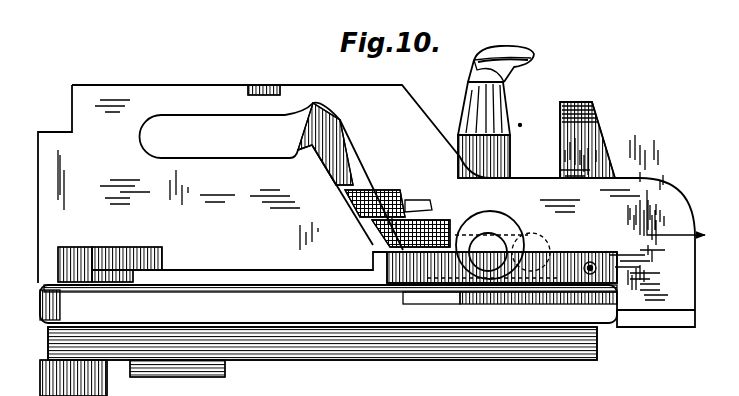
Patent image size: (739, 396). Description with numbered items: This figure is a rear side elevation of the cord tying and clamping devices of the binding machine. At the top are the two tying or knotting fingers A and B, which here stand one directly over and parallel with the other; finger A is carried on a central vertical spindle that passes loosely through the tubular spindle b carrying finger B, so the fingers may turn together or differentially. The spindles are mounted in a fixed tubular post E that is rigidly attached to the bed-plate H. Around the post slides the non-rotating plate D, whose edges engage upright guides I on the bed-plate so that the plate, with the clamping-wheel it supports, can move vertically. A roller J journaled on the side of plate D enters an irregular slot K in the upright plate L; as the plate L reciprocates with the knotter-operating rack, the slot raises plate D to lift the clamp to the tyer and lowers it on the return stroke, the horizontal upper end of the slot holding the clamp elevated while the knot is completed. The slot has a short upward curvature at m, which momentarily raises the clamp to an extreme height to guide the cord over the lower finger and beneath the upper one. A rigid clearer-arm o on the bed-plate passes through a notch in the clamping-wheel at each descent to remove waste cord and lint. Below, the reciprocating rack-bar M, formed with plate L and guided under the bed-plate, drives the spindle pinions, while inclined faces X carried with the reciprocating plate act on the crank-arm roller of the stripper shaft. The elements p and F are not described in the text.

The tying finger A is at (520, 44).
The tying finger B is at (505, 70).
The tubular spindle b is at (517, 113).
The tubular post E is at (484, 130).
The upright plate L is at (371, 206).
The irregular slot K is at (226, 136).
The upright guides I is at (344, 176).
The upward curvature of slot m is at (300, 110).
The set screw p is at (267, 86).
The clearer-arm o is at (382, 200).
The spring F is at (410, 210).
The non-rotating plate D is at (411, 233).
The roller J is at (492, 245).
The inclined faces X is at (484, 264).
The bed-plate H is at (328, 285).
The rack-bar M is at (318, 361).